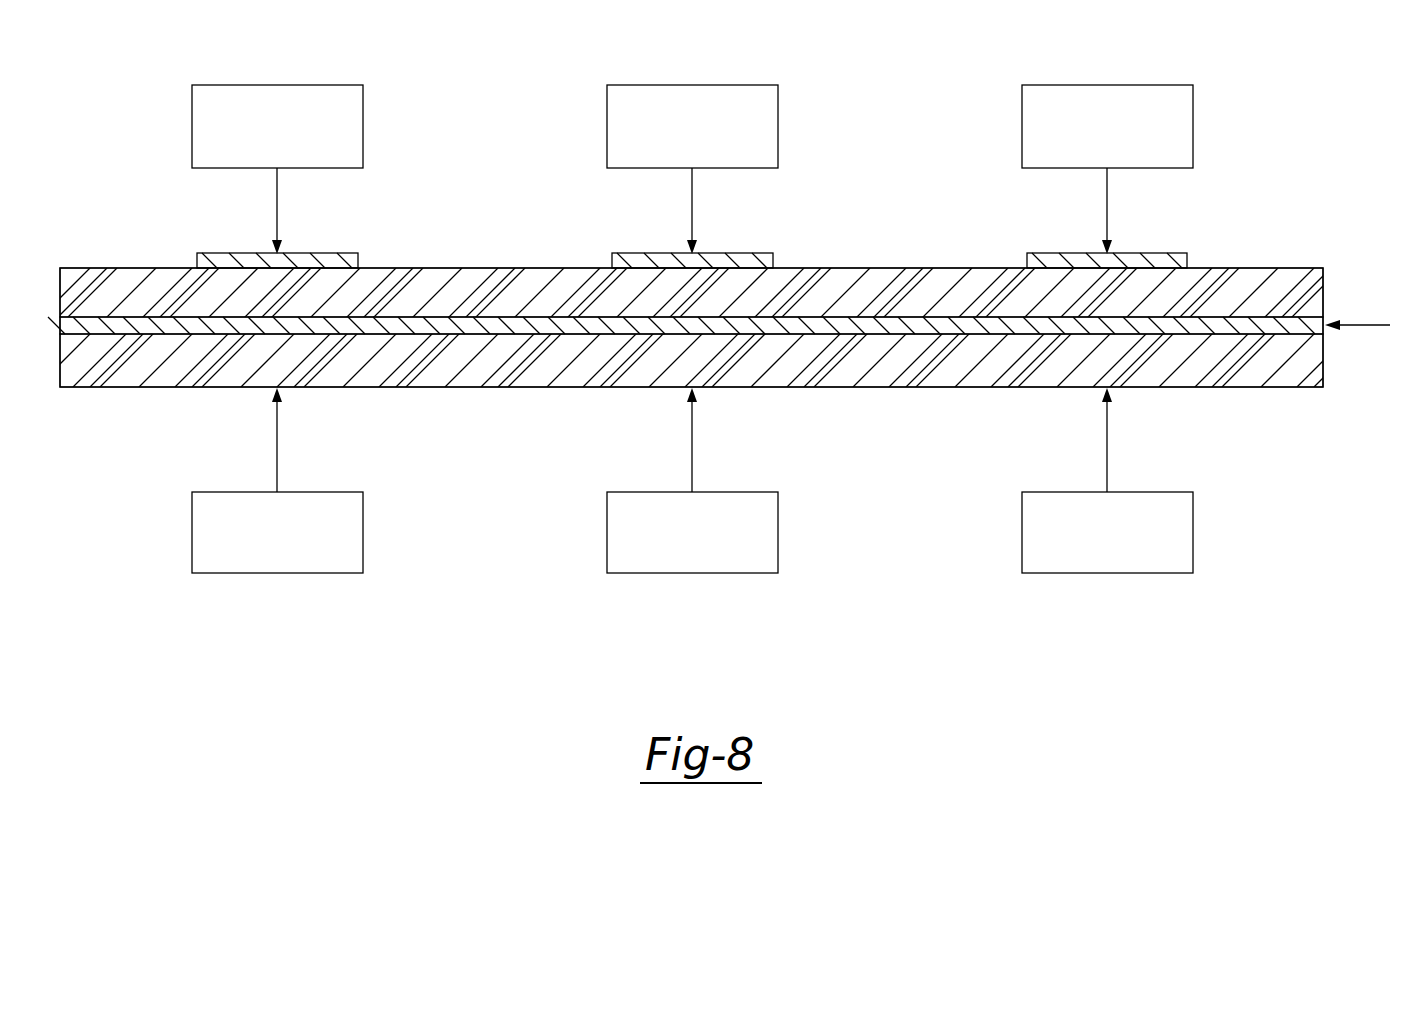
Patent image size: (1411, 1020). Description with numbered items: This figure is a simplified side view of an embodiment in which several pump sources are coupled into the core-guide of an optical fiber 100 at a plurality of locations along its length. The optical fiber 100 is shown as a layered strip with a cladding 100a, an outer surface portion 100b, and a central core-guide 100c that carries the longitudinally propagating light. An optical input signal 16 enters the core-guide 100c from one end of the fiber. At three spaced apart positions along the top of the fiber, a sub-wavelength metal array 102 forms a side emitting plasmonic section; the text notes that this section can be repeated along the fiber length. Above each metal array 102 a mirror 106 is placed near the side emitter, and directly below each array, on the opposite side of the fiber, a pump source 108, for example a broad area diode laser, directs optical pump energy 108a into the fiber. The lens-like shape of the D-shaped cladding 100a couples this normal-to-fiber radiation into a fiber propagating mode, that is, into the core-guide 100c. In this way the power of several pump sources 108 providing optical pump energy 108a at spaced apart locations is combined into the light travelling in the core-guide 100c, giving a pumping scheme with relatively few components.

The optical fiber 100 is at (116, 256).
The cladding 100a is at (488, 380).
The outer surface portion 100b is at (466, 268).
The core-guide 100c is at (103, 325).
The sub-wavelength metal array 102 is at (352, 253).
The mirror 106 is at (258, 156).
The pump source 108 is at (258, 563).
The optical pump energy 108a is at (277, 222).
The optical input signal 16 is at (1367, 332).